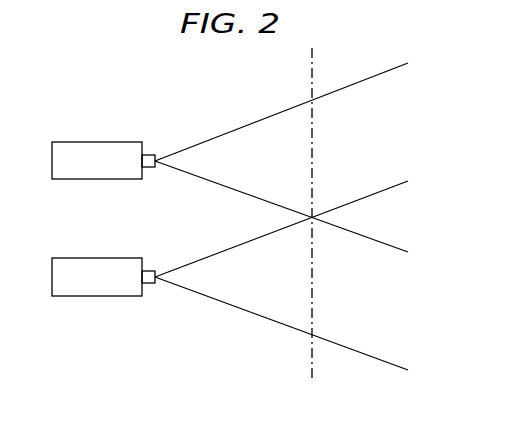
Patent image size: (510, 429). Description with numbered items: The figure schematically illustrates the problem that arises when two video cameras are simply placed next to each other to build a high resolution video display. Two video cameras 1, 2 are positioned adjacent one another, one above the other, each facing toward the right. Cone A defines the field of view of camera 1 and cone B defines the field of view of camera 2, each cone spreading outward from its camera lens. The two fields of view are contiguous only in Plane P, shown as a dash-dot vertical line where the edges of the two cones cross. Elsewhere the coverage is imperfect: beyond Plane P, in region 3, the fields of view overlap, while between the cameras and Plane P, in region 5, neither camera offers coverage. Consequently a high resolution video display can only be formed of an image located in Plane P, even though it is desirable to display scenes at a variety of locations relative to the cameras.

The video camera 1 is at (70, 142).
The video camera 2 is at (70, 258).
The region 3 is at (360, 218).
The region 5 is at (260, 218).
The cone A is at (243, 126).
The cone B is at (243, 243).
The plane P is at (311, 225).